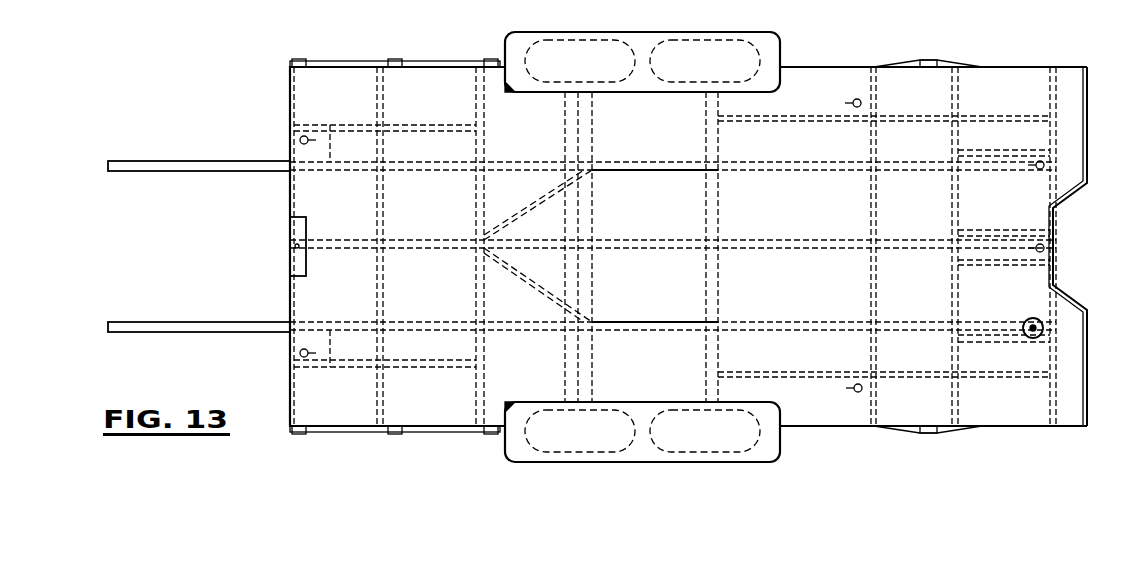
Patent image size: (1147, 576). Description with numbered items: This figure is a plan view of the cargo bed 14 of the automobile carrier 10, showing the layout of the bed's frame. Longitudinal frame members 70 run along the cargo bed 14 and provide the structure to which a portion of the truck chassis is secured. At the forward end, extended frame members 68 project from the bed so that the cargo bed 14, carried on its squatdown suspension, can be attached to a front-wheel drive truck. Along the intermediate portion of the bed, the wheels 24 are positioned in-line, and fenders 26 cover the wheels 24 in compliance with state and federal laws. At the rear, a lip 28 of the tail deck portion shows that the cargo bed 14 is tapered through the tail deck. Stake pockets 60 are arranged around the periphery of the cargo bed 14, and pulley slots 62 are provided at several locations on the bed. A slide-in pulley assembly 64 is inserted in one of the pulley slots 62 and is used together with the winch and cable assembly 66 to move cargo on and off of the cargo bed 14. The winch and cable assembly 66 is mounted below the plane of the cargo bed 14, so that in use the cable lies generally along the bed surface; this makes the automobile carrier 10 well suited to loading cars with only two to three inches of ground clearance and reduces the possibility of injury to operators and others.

The automobile carrier 10 is at (1025, 33).
The cargo bed 14 is at (1040, 430).
The wheels 24 is at (558, 50).
The fenders 26 is at (780, 440).
The lip 28 is at (1090, 118).
The stake pockets 60 is at (300, 60).
The pulley slots 62 is at (306, 136).
The slide-in pulley assembly 64 is at (1044, 328).
The winch and cable assembly 66 is at (306, 258).
The extended frame members 68 is at (256, 172).
The frame members 70 is at (486, 190).